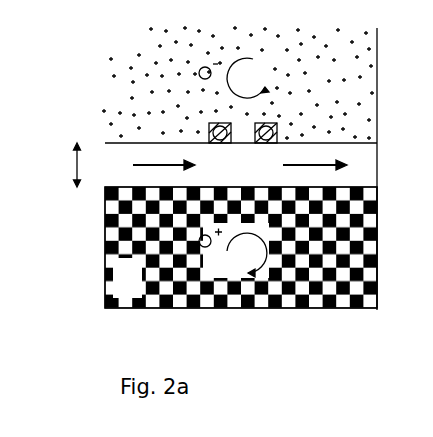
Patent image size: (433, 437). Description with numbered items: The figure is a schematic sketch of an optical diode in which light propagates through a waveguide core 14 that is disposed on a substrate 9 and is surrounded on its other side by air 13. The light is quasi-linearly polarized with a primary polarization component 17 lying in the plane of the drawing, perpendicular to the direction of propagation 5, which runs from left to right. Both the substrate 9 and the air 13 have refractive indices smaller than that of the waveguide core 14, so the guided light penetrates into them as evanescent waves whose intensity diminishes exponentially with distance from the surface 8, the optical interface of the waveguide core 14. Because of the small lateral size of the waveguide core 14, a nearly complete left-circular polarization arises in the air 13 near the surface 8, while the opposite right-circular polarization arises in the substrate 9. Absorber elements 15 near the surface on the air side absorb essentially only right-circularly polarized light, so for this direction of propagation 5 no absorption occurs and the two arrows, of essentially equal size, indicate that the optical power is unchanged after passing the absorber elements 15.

The air 13 is at (146, 52).
The absorber elements 15 is at (211, 129).
The surface 8 is at (343, 143).
The waveguide core 14 is at (246, 180).
The direction of propagation 5 is at (133, 165).
The primary polarization component 17 is at (72, 160).
The substrate 9 is at (133, 295).